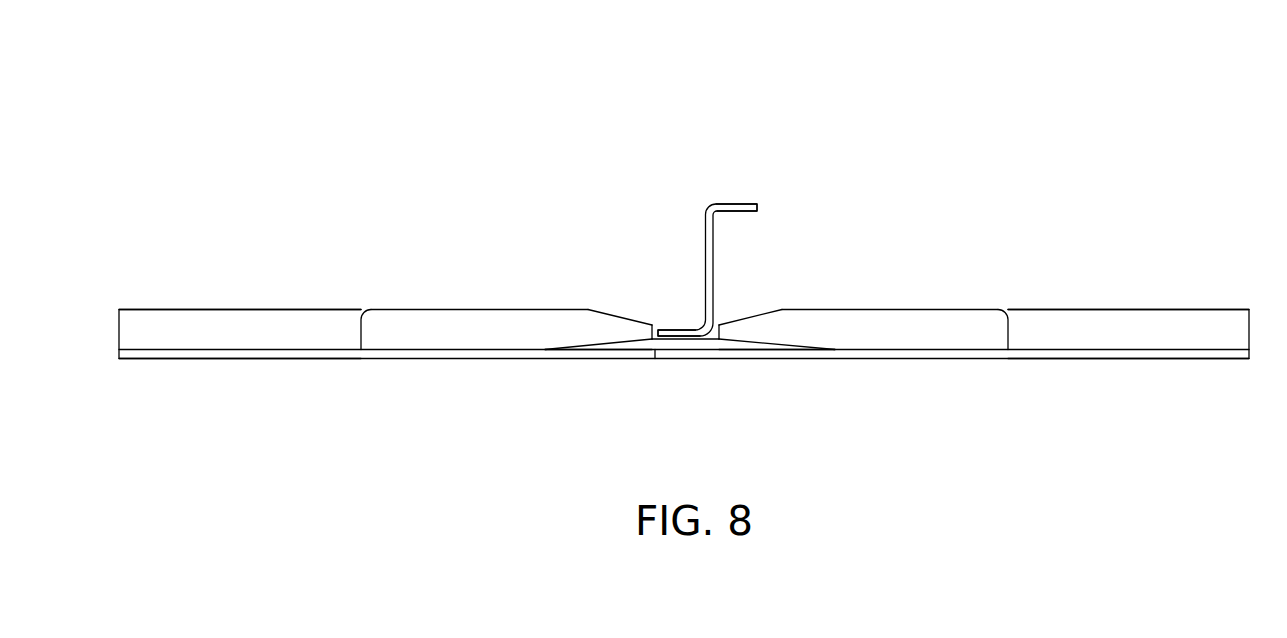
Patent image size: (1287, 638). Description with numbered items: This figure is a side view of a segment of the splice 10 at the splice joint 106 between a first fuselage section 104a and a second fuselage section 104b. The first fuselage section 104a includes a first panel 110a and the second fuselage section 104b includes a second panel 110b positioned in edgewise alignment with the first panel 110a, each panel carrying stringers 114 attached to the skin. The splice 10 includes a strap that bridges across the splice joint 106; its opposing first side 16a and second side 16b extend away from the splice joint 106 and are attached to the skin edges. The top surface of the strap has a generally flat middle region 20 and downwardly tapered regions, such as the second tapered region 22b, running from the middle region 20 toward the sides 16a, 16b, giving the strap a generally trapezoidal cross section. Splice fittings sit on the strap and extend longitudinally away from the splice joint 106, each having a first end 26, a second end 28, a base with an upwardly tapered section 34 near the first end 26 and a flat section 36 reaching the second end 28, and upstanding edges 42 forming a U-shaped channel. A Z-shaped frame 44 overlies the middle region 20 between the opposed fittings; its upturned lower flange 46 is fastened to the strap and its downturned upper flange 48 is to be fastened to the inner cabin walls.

The splice 10 is at (1033, 96).
The first fuselage section 104a is at (1179, 256).
The second fuselage section 104b is at (176, 254).
The first panel 110a is at (1182, 358).
The second panel 110b is at (187, 360).
The stringers 114 is at (252, 318).
The flat section 36 is at (443, 352).
The second end 28 is at (360, 330).
The upstanding edges 42 is at (410, 320).
The upwardly tapered section 34 is at (590, 312).
The first end 26 is at (642, 322).
The first side 16a is at (790, 347).
The second side 16b is at (567, 347).
The middle region 20 is at (670, 350).
The second tapered region 22b is at (624, 349).
The splice joint 106 is at (695, 358).
The frame 44 is at (713, 248).
The upper flange 48 is at (738, 204).
The lower flange 46 is at (690, 330).